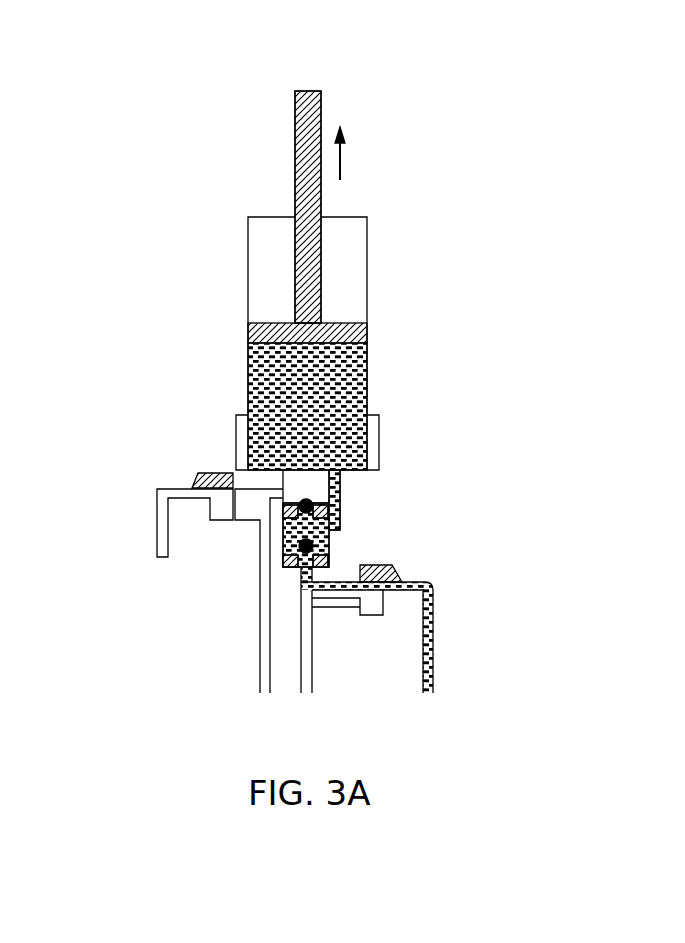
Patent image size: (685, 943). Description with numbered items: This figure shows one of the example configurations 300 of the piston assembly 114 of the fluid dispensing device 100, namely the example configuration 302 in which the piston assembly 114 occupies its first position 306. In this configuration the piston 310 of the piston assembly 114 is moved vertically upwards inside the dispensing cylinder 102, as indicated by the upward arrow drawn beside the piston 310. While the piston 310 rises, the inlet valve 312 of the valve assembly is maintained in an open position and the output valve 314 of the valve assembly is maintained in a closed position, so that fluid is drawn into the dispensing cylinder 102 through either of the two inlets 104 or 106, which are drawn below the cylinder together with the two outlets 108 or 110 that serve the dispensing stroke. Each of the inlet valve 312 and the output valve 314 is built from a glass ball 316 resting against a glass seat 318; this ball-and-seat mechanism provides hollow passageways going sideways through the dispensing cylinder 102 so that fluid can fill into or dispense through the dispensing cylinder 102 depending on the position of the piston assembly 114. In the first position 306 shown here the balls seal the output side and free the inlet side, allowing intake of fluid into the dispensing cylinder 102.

The fluid dispensing device 100 is at (455, 112).
The example configurations of the piston assembly 300 is at (613, 97).
The example configuration 302 is at (437, 198).
The piston 310 is at (321, 295).
The first position 306 is at (229, 322).
The piston assembly 114 is at (389, 341).
The dispensing cylinder 102 is at (370, 376).
The outlet 108 is at (158, 489).
The output valve 314 is at (340, 490).
The glass seat 318 is at (342, 532).
The inlet valve 312 is at (283, 556).
The glass ball 316 is at (302, 510).
The outlet 110 is at (258, 604).
The inlet 104 is at (313, 643).
The inlet 106 is at (436, 588).